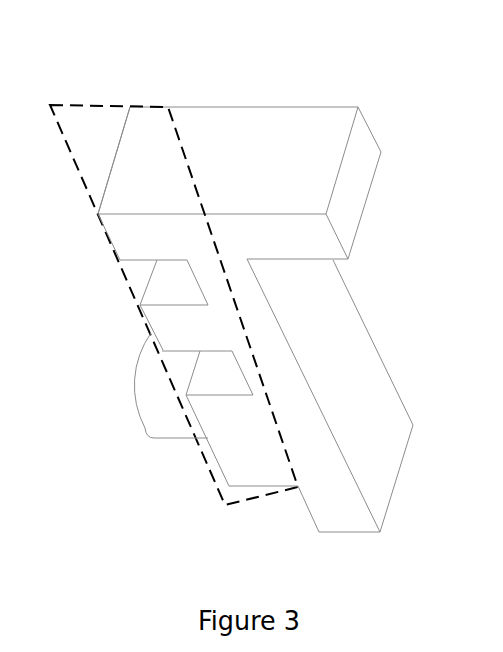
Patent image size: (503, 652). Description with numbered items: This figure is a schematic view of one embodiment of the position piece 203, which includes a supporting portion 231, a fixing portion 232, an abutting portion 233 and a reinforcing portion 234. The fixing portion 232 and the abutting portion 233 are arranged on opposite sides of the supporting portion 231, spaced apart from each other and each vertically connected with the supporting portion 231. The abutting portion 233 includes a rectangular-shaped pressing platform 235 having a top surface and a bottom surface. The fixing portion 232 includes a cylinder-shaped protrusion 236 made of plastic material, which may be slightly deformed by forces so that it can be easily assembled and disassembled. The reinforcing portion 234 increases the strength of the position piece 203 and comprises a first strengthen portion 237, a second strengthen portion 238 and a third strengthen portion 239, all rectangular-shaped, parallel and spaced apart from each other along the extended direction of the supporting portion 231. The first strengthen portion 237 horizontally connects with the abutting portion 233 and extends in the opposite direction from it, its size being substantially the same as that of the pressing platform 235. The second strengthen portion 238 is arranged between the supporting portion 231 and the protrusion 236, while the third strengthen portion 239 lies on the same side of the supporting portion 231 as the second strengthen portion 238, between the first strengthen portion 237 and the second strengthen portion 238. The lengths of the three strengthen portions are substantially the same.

The position piece 203 is at (269, 40).
The supporting portion 231 is at (366, 380).
The fixing portion 232 is at (128, 373).
The abutting portion 233 is at (318, 106).
The reinforcing portion 234 is at (118, 106).
The pressing platform 235 is at (313, 172).
The protrusion 236 is at (152, 422).
The first strengthen portion 237 is at (143, 185).
The second strengthen portion 238 is at (233, 457).
The third strengthen portion 239 is at (166, 292).